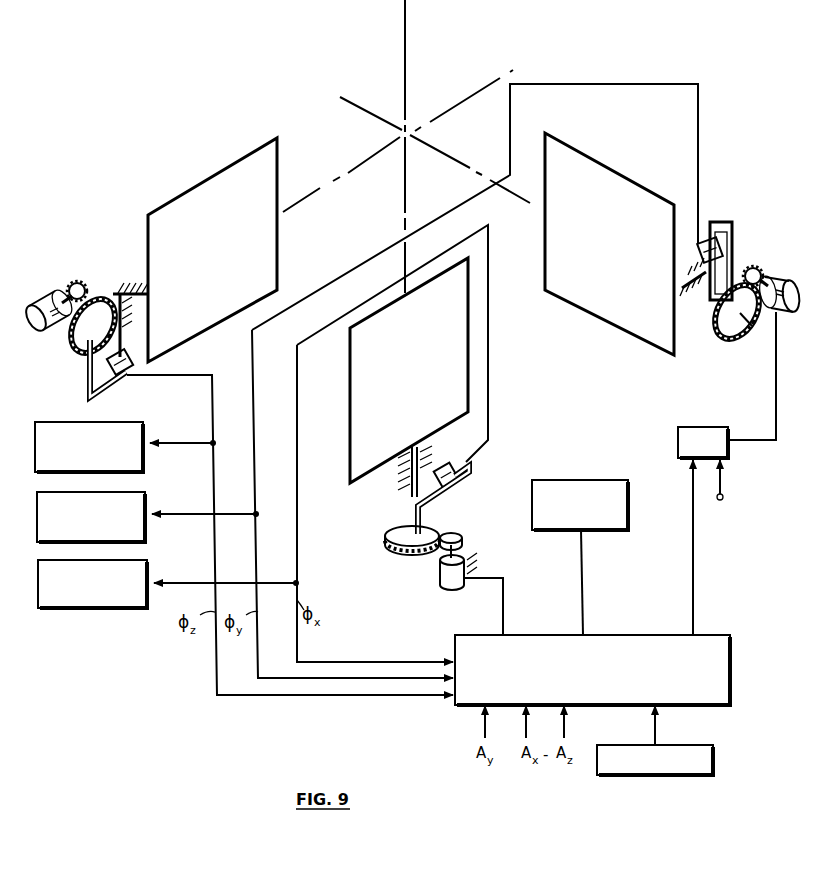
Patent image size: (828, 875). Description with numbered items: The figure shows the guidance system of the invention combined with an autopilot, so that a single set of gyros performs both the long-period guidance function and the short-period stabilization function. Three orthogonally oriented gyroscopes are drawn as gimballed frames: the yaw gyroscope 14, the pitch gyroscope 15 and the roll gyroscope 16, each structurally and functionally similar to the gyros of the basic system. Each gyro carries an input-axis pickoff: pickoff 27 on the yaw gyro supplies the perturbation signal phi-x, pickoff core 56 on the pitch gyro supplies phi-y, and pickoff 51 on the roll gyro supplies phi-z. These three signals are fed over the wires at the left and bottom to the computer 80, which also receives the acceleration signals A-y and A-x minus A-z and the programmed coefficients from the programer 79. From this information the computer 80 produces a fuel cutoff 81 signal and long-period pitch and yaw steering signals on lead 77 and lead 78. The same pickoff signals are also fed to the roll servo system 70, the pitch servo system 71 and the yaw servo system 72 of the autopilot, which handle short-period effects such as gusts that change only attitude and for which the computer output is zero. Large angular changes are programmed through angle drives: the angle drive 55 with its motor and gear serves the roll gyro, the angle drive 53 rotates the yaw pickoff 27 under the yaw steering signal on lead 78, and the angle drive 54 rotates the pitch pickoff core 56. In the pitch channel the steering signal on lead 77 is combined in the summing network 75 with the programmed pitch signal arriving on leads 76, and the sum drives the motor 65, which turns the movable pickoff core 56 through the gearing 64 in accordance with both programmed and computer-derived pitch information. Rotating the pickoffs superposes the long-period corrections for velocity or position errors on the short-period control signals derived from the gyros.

The gyroscope 14 is at (415, 382).
The gyroscope 15 is at (614, 256).
The gyroscope 16 is at (213, 266).
The input axis pickoff 27 is at (446, 465).
The input axis pickoff 51 is at (125, 380).
The angle drive 53 is at (425, 562).
The angle drive 54 is at (742, 275).
The angle drive 55 is at (57, 327).
The pickoff core 56 is at (699, 247).
The gearing 64 is at (735, 336).
The motor 65 is at (784, 311).
The roll servo system 70 is at (52, 428).
The pitch servo system 71 is at (136, 497).
The yaw servo system 72 is at (143, 577).
The summing network 75 is at (702, 427).
The leads 76 is at (723, 486).
The lead 77 is at (689, 490).
The lead 78 is at (505, 600).
The programer 79 is at (713, 752).
The computer 80 is at (712, 697).
The fuel cutoff 81 is at (603, 481).